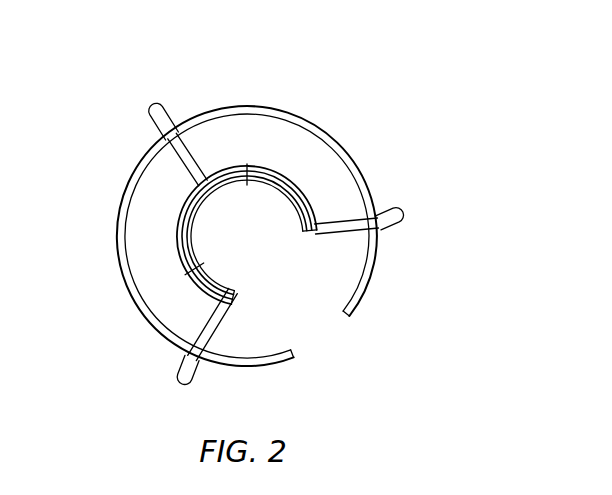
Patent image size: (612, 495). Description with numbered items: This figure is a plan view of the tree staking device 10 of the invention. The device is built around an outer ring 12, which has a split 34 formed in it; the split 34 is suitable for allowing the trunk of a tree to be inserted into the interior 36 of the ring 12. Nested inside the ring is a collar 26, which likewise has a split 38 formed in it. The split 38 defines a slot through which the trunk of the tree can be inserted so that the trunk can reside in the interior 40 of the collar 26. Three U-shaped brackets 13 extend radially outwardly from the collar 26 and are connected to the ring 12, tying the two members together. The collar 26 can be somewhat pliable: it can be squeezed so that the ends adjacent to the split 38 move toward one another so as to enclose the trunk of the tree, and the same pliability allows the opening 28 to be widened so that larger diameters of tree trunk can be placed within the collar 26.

The tree staking device 10 is at (394, 150).
The ring 12 is at (230, 223).
The U-shaped brackets 13 is at (138, 125).
The collar 26 is at (290, 180).
The opening 28 is at (217, 197).
The split 34 is at (323, 335).
The interior 36 is at (147, 205).
The split 38 is at (275, 278).
The interior 40 is at (261, 248).